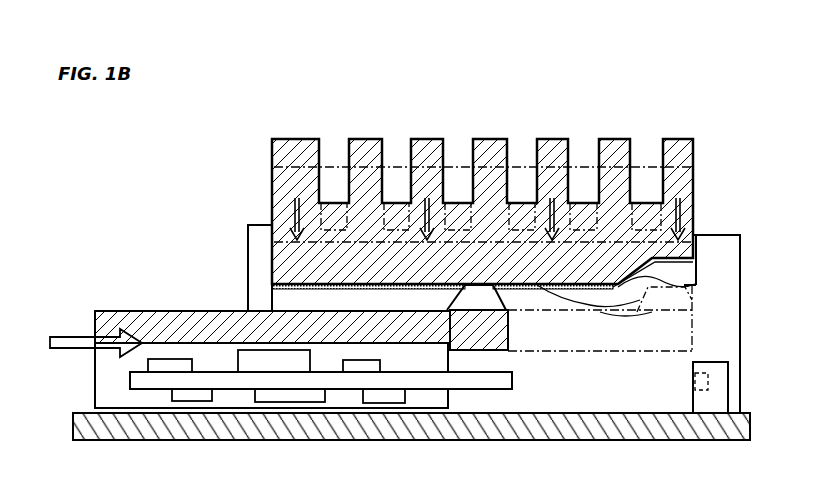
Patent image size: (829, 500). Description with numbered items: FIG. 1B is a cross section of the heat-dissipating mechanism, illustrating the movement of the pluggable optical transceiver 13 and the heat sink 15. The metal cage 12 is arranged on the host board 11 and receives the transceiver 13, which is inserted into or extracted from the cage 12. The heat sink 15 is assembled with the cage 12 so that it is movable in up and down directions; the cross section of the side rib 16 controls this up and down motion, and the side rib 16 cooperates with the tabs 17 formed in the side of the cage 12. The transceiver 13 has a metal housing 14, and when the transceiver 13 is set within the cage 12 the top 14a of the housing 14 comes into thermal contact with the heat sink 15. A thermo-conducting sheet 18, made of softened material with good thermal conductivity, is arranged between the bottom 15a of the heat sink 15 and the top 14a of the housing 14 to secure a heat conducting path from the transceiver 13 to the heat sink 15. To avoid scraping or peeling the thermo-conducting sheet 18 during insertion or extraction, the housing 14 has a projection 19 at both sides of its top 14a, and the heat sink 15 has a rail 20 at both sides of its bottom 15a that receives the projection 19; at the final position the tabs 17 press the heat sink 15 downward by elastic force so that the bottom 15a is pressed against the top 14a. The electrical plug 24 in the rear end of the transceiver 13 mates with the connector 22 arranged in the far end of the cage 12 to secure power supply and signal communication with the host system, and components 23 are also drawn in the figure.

The host board 11 is at (535, 426).
The metal cage 12 is at (740, 306).
The pluggable optical transceiver 13 is at (87, 381).
The housing 14 is at (157, 315).
The top of the housing 14a is at (232, 315).
The heat sink 15 is at (683, 156).
The bottom of the heat sink 15a is at (560, 293).
The side rib 16 is at (273, 213).
The tabs 17 is at (271, 178).
The thermo-conducting sheet 18 is at (637, 304).
The projection 19 is at (492, 295).
The rail 20 is at (695, 288).
The connector 22 is at (720, 385).
The electronic components 23 is at (335, 382).
The electrical plug 24 is at (485, 380).